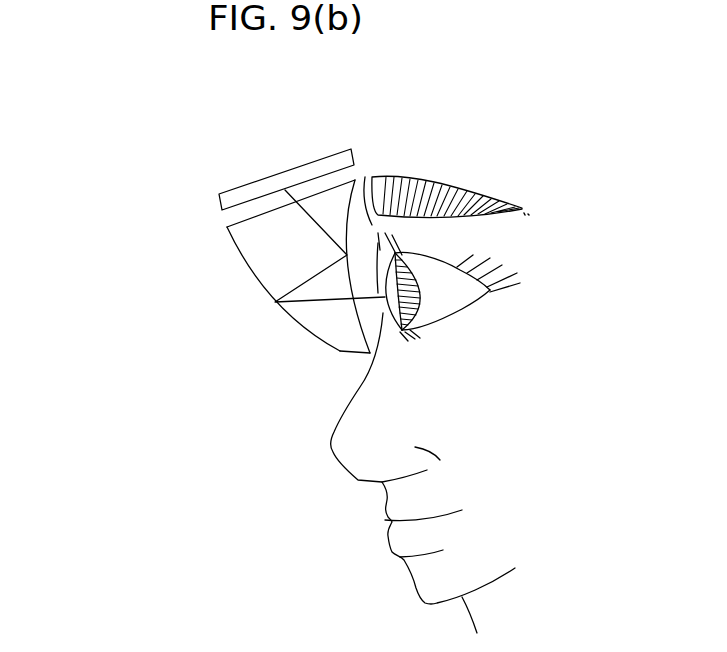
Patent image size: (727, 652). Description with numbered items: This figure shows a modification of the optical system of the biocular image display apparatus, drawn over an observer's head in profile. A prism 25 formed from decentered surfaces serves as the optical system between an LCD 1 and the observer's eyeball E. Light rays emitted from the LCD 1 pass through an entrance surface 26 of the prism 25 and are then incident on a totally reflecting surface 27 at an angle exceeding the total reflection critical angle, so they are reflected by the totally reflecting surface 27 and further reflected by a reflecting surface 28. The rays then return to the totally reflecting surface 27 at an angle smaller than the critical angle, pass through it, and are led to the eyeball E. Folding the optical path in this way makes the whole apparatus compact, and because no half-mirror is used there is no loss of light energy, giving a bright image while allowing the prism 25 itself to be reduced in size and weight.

The LCD 1 is at (245, 198).
The prism 25 is at (337, 300).
The entrance surface 26 is at (327, 183).
The totally reflecting surface 27 is at (350, 315).
The reflecting surface 28 is at (258, 285).
The eyeball E is at (457, 293).